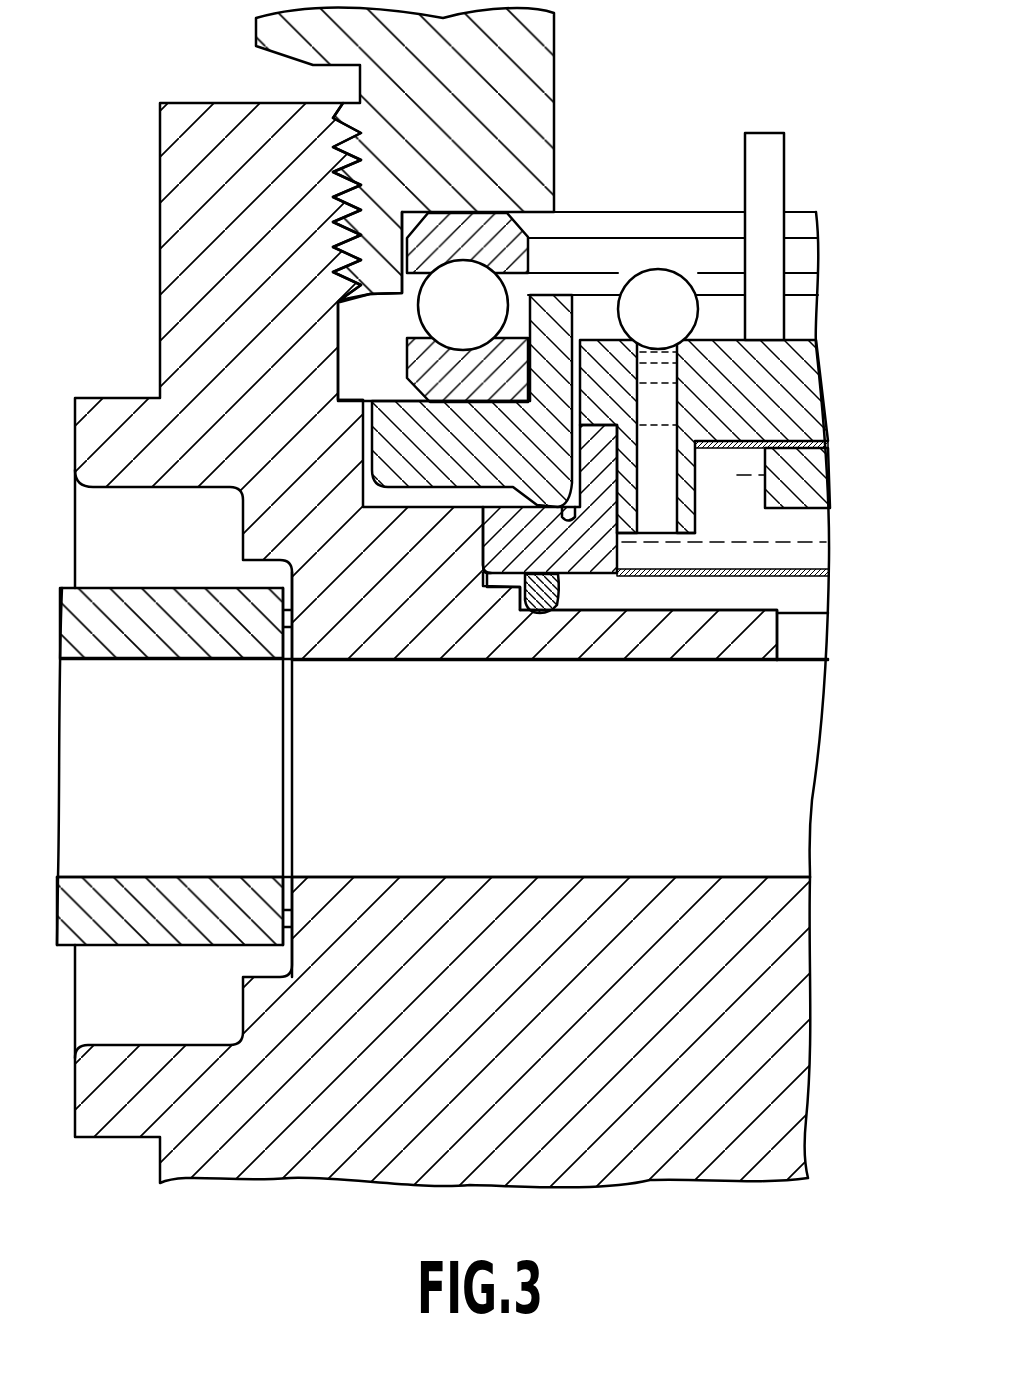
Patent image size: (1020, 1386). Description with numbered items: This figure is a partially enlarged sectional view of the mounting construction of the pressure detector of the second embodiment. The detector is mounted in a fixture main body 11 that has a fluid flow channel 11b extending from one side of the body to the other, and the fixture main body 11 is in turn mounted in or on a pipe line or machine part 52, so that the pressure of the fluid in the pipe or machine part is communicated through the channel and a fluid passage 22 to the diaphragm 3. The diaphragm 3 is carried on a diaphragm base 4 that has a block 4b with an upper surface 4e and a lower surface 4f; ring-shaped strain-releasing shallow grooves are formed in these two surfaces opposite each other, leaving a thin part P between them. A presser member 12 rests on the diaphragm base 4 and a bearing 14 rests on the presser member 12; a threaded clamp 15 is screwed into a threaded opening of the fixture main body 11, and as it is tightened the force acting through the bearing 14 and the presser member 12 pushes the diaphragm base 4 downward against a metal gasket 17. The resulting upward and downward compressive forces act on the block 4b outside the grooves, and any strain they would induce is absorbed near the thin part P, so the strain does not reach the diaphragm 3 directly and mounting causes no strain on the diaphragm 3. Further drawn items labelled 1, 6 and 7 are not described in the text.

The seal ring 1 is at (800, 407).
The diaphragm 3 is at (760, 613).
The diaphragm base 4 is at (604, 585).
The block 4b is at (490, 551).
The upper surface 4e is at (540, 506).
The lower surface 4f is at (486, 577).
The O-ring 6 is at (658, 282).
The pin 7 is at (768, 140).
The fixture main body 11 is at (175, 214).
The fluid flow channel 11b is at (375, 872).
The presser member 12 is at (383, 442).
The bearing 14 is at (390, 318).
The clamp 15 is at (533, 105).
The metal gasket 17 is at (543, 608).
The fluid passage 22 is at (777, 640).
The pipe line or machine part 52 is at (185, 588).
The thin part P is at (523, 533).